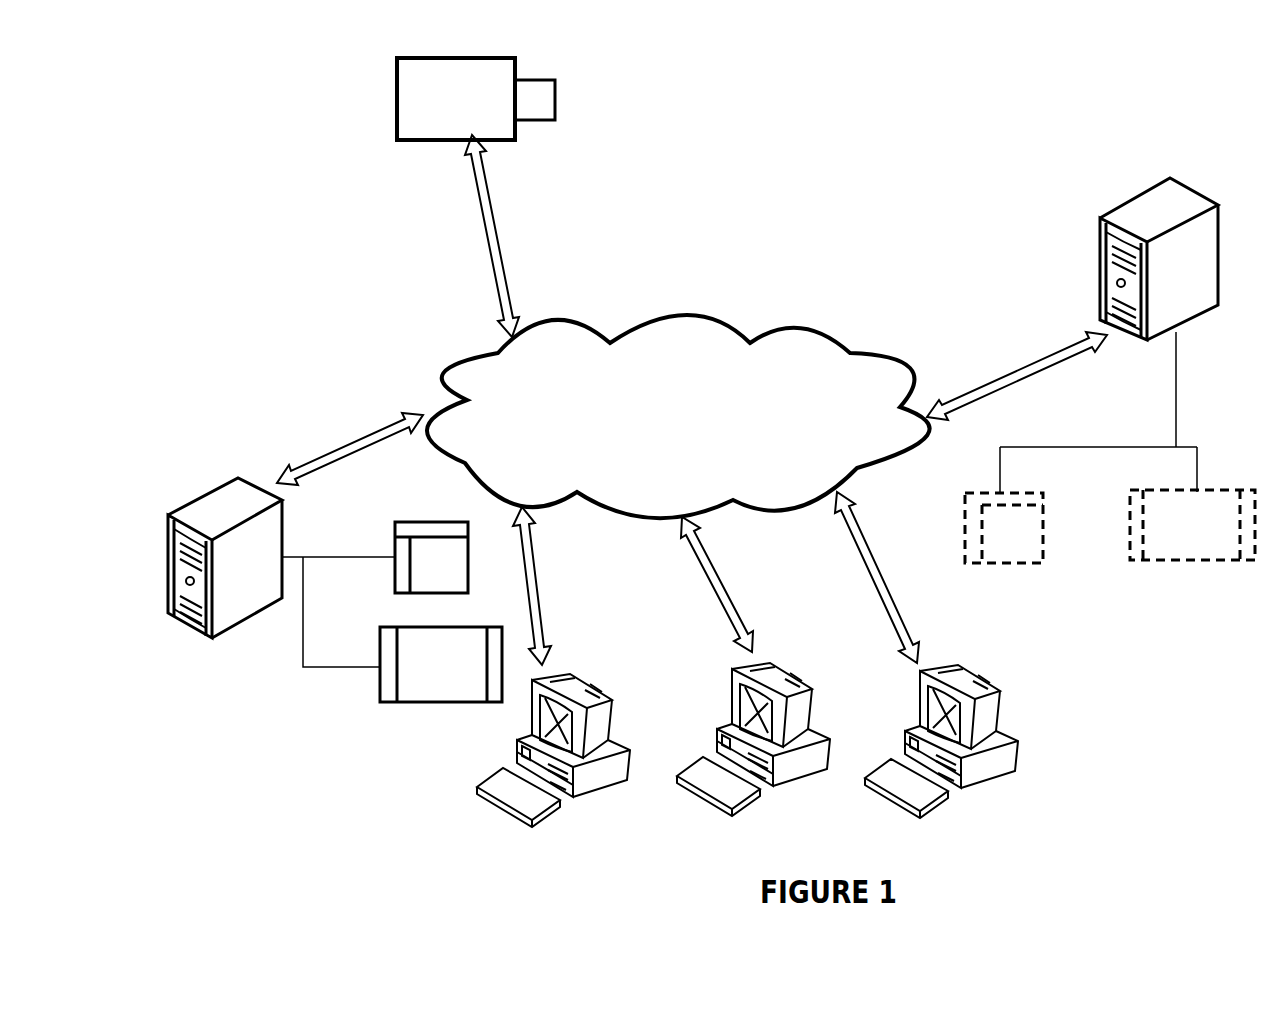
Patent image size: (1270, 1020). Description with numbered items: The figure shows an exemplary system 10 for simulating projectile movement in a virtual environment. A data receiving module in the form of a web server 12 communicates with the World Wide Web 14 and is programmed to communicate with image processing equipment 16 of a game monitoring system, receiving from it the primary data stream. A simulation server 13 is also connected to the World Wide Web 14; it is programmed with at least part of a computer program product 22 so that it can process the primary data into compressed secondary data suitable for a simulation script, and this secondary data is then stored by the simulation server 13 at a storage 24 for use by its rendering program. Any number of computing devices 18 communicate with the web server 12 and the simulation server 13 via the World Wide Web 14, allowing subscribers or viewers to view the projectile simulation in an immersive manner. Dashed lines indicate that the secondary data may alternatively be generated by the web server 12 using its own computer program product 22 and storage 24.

The system 10 is at (913, 145).
The web server 12 is at (1080, 233).
The simulation server 13 is at (220, 485).
The World Wide Web 14 is at (688, 307).
The image processing equipment 16 is at (380, 107).
The computing devices 18 is at (1073, 712).
The computer program product 22 is at (442, 706).
The secondary data storage 24 is at (455, 518).